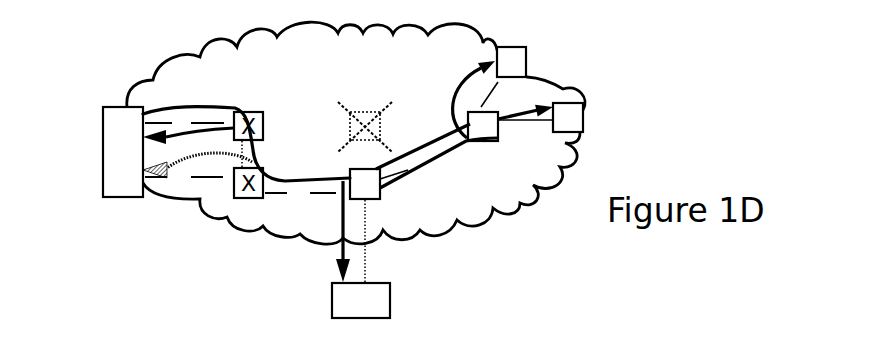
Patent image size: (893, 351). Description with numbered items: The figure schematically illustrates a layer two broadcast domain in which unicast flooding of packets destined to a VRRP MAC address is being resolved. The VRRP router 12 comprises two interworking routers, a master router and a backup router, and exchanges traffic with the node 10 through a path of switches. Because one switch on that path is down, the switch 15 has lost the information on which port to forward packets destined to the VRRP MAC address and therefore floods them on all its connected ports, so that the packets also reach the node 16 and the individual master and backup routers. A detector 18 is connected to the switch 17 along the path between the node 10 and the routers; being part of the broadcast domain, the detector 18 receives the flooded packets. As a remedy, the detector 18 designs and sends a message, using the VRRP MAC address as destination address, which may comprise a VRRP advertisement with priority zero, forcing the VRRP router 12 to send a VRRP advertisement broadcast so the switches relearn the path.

The node 10 is at (583, 116).
The VRRP router 12 is at (103, 115).
The switch 15 is at (498, 112).
The node 16 is at (527, 57).
The switch 17 is at (380, 189).
The detector 18 is at (390, 297).